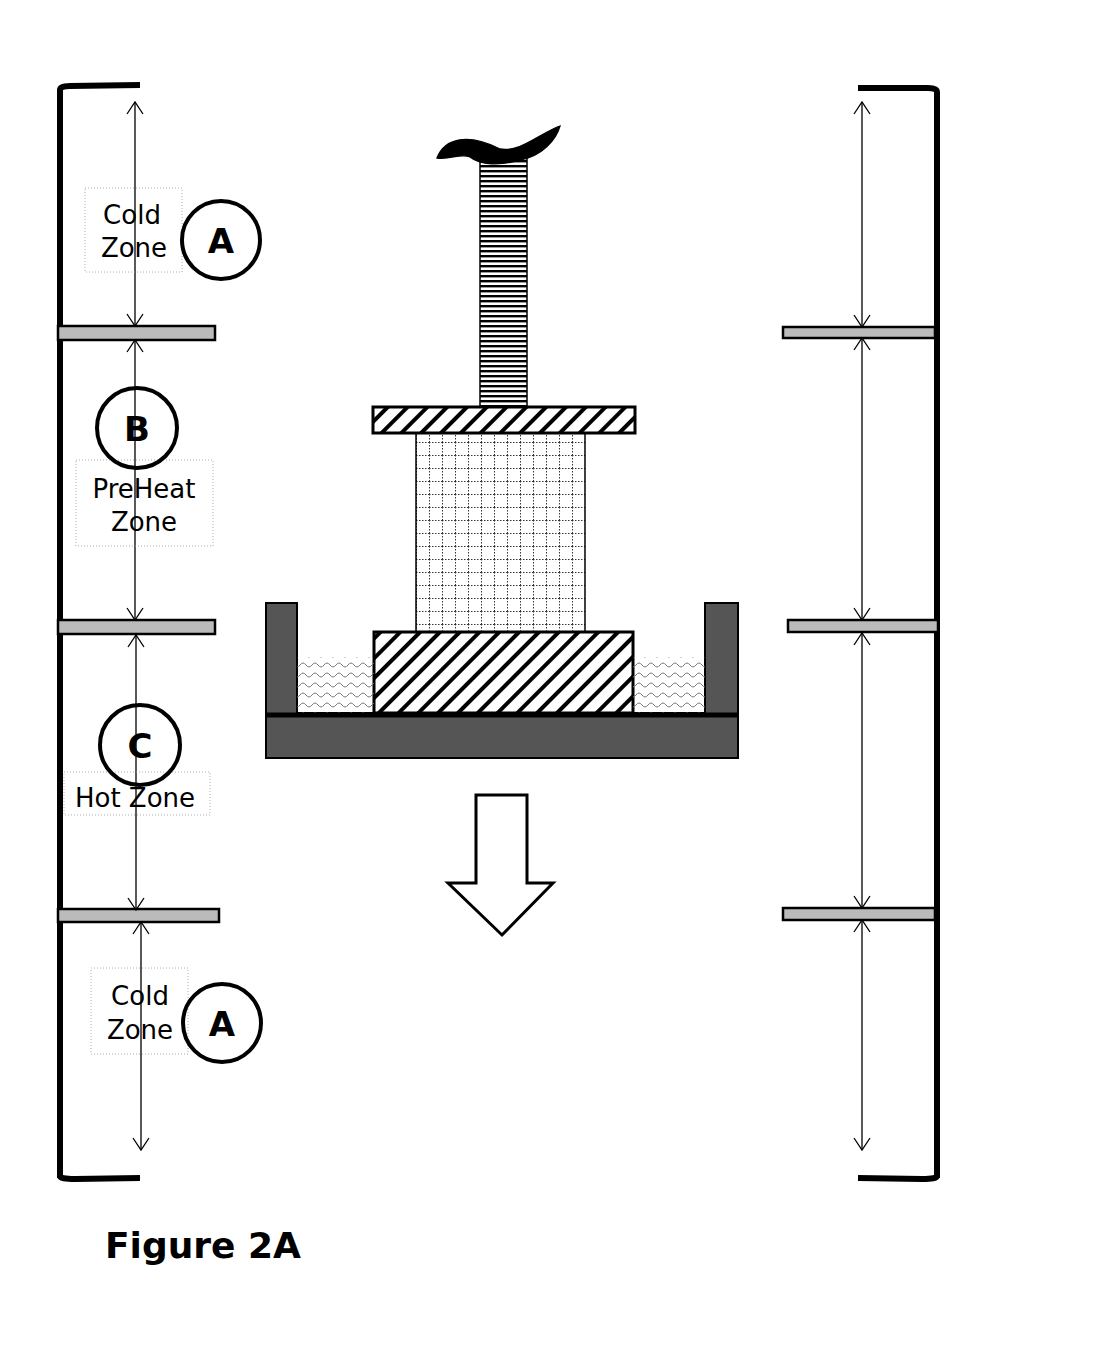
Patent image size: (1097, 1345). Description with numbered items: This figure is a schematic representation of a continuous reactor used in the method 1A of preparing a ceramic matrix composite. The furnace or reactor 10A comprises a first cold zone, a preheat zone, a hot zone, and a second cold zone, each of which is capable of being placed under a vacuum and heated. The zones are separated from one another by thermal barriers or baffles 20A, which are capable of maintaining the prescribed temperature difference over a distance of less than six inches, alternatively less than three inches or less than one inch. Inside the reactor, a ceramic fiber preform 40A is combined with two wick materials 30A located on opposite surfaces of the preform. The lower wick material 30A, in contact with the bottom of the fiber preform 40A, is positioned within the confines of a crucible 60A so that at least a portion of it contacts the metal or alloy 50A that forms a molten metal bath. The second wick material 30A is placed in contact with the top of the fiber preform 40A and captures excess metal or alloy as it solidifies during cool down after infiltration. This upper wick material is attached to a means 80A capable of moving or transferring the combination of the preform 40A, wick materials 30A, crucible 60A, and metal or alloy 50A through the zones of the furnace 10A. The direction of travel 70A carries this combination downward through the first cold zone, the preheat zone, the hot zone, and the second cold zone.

The method 1A is at (668, 198).
The furnace or reactor 10A is at (936, 88).
The thermal barrier or baffle 20A is at (805, 333).
The wick material 30A is at (425, 406).
The ceramic fiber preform 40A is at (449, 535).
The metal or alloy 50A is at (327, 675).
The crucible 60A is at (675, 755).
The direction of travel 70A is at (497, 856).
The means capable of moving or transferring 80A is at (500, 268).